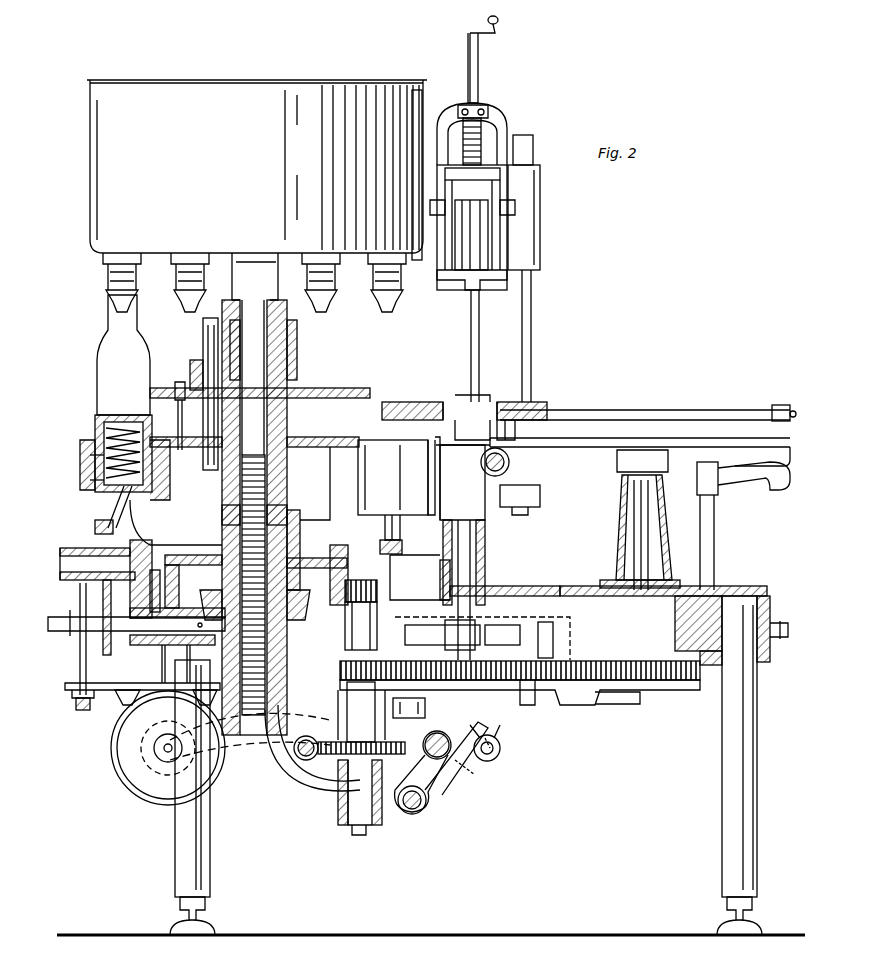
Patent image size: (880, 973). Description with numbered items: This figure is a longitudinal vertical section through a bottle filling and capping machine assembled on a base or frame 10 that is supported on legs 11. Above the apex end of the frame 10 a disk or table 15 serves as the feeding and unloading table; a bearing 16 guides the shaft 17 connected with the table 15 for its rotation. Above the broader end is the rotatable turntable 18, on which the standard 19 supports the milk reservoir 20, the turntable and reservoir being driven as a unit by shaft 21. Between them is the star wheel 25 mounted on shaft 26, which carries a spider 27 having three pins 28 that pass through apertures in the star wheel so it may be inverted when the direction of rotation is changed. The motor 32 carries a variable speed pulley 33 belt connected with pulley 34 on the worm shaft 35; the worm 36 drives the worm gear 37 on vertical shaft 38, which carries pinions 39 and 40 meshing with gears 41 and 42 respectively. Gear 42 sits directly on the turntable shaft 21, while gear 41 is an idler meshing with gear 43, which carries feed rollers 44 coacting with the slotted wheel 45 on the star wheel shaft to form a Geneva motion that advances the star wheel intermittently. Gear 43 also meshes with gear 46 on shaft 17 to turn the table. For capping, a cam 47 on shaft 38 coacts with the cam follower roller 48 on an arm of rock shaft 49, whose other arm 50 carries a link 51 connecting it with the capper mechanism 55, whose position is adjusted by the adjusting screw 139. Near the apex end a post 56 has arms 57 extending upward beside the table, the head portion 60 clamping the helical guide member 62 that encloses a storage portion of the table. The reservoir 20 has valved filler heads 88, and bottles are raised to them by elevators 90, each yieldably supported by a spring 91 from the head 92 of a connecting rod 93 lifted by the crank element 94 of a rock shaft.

The base or frame 10 is at (752, 585).
The legs 11 is at (175, 828).
The disk or table 15 is at (680, 438).
The bearing 16 is at (615, 533).
The shaft 17 is at (640, 551).
The turntable 18 is at (82, 445).
The standard 19 is at (288, 390).
The milk reservoir 20 is at (257, 166).
The shaft 21 is at (242, 490).
The star wheel 25 is at (533, 408).
The shaft 26 is at (485, 536).
The spider 27 is at (520, 428).
The pins 28 is at (515, 408).
The motor 32 is at (130, 764).
The variable speed pulley 33 is at (125, 790).
The pulley 34 is at (285, 780).
The worm shaft 35 is at (306, 760).
The worm 36 is at (345, 760).
The worm gear 37 is at (350, 790).
The vertical shaft 38 is at (355, 638).
The pinion 39 is at (320, 710).
The pinion 40 is at (345, 600).
The gear 41 is at (520, 660).
The gear 42 is at (345, 572).
The gear 43 is at (560, 695).
The feed rollers 44 is at (545, 625).
The slotted wheel 45 is at (478, 630).
The gear 46 is at (610, 700).
The cam 47 is at (393, 707).
The cam follower roller 48 is at (452, 748).
The rock shaft 49 is at (428, 790).
The arm 50 is at (465, 760).
The link 51 is at (471, 324).
The capper mechanism 55 is at (541, 243).
The post 56 is at (708, 545).
The arms 57 is at (758, 486).
The head portion 60 is at (783, 405).
The guide member 62 is at (714, 410).
The valved filler heads 88 is at (172, 280).
The elevators 90 is at (100, 420).
The spring 91 is at (92, 457).
The head 92 is at (92, 479).
The connecting rod 93 is at (110, 500).
The crank element 94 is at (95, 525).
The adjusting screw 139 is at (510, 462).